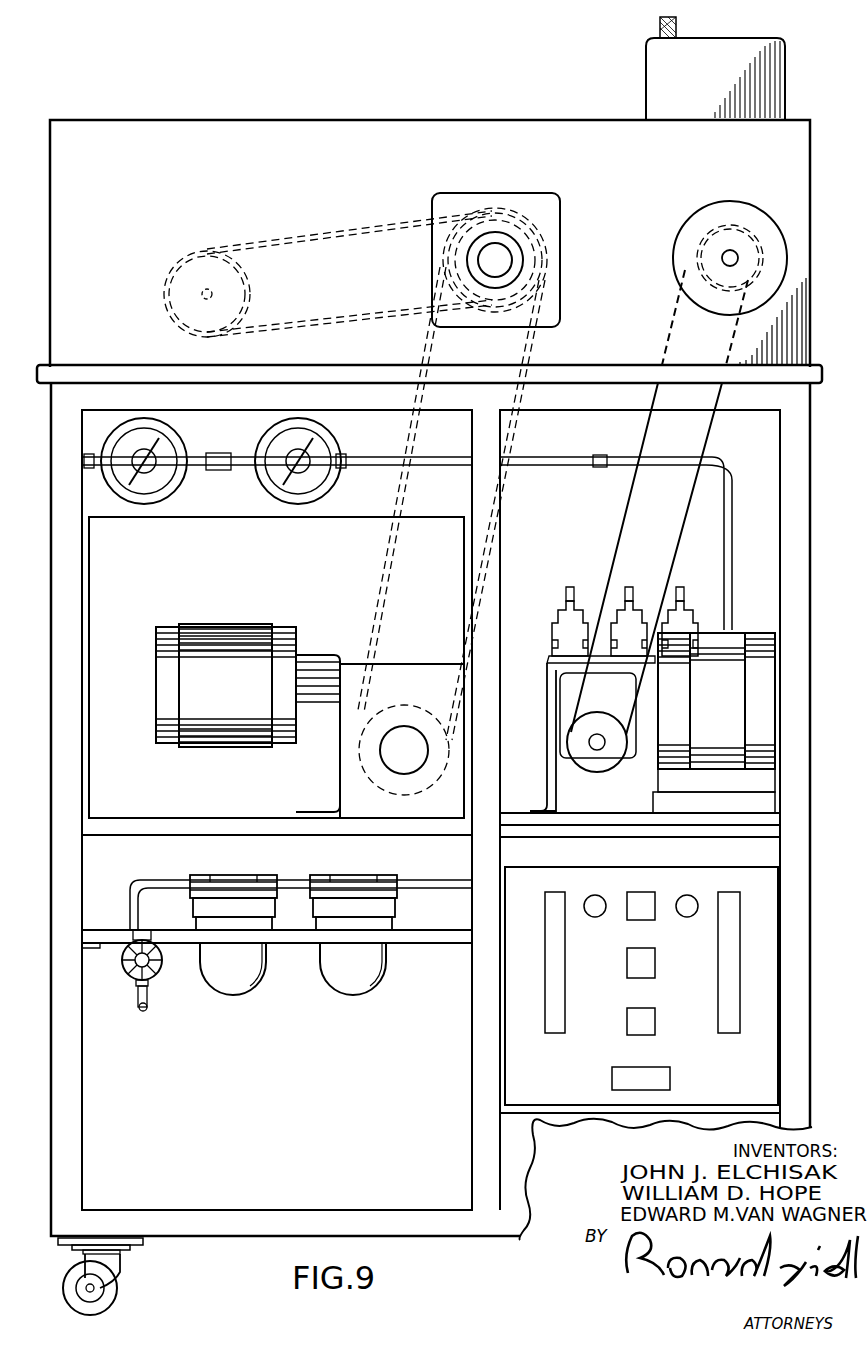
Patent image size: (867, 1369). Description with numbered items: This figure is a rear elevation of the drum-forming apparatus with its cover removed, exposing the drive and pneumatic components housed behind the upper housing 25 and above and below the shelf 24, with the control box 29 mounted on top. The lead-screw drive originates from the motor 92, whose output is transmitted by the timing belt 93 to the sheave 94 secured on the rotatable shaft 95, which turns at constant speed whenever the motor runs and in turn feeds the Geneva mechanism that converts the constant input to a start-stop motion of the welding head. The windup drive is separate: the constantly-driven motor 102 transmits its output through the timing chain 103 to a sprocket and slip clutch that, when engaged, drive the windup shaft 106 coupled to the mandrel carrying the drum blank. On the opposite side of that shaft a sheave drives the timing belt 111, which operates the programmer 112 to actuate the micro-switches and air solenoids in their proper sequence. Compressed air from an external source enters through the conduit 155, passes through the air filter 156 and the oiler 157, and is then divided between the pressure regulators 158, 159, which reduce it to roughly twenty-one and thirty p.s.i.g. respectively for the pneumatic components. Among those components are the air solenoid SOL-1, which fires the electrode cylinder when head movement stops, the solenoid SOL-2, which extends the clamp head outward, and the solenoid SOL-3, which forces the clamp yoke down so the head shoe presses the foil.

The shelf 24 is at (114, 366).
The upper housing 25 is at (372, 130).
The control box 29 is at (642, 58).
The motor 92 is at (728, 632).
The timing belt 93 is at (628, 492).
The sheave 94 is at (758, 233).
The rotatable shaft 95 is at (728, 250).
The motor 102 is at (215, 626).
The timing chain 103 is at (384, 554).
The windup shaft 106 is at (507, 262).
The timing belt 111 is at (307, 238).
The programmer 112 is at (200, 251).
The conduit 155 is at (147, 1010).
The air filter 156 is at (248, 996).
The oiler 157 is at (360, 996).
The pressure regulator 158 is at (173, 441).
The pressure regulator 159 is at (328, 441).
The air solenoid SOL-1 is at (553, 605).
The air solenoid SOL-2 is at (626, 605).
The air solenoid SOL-3 is at (689, 605).